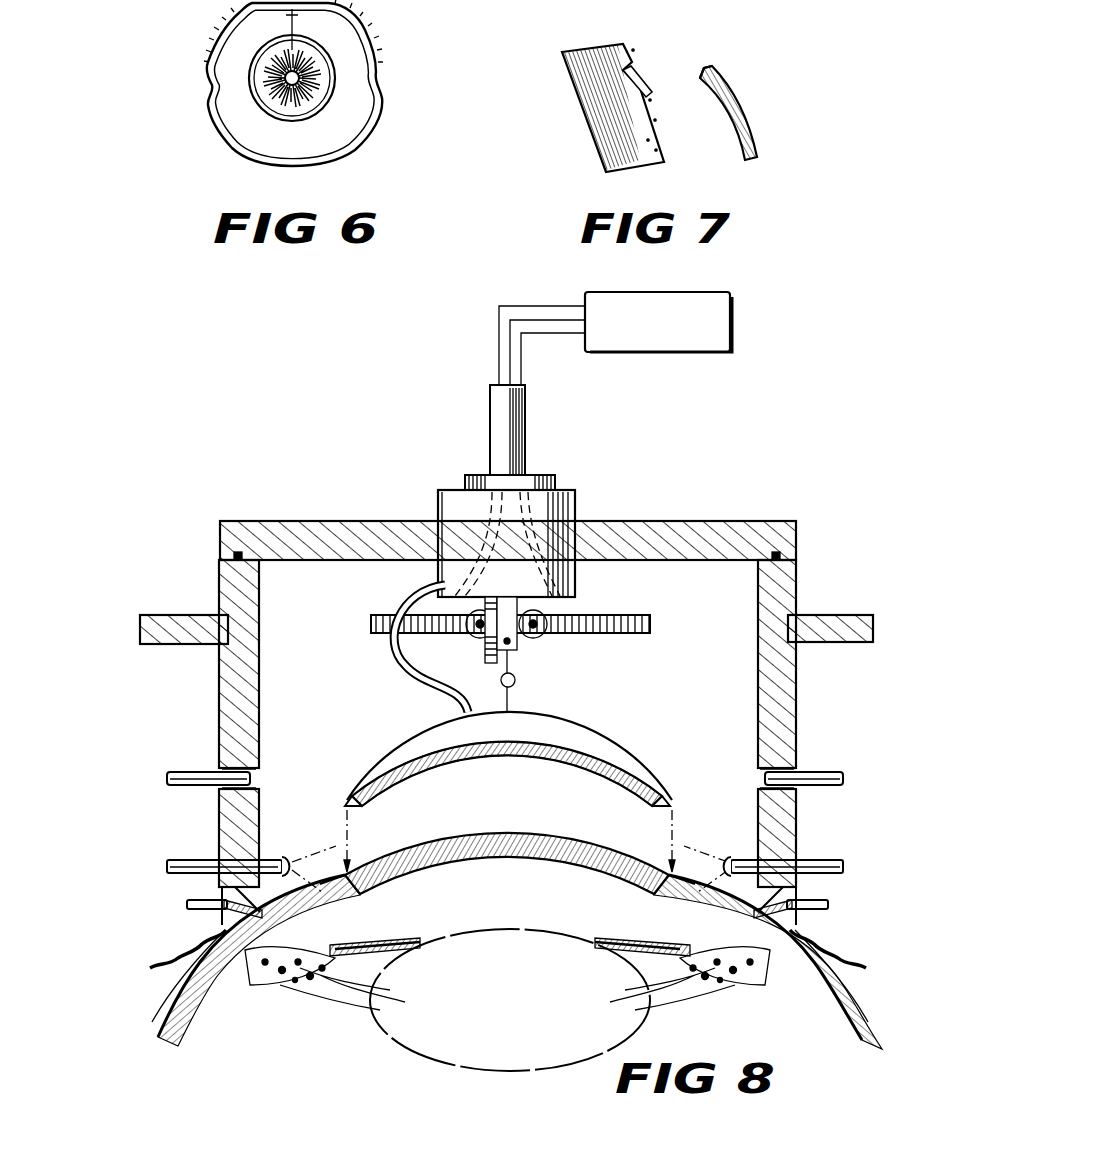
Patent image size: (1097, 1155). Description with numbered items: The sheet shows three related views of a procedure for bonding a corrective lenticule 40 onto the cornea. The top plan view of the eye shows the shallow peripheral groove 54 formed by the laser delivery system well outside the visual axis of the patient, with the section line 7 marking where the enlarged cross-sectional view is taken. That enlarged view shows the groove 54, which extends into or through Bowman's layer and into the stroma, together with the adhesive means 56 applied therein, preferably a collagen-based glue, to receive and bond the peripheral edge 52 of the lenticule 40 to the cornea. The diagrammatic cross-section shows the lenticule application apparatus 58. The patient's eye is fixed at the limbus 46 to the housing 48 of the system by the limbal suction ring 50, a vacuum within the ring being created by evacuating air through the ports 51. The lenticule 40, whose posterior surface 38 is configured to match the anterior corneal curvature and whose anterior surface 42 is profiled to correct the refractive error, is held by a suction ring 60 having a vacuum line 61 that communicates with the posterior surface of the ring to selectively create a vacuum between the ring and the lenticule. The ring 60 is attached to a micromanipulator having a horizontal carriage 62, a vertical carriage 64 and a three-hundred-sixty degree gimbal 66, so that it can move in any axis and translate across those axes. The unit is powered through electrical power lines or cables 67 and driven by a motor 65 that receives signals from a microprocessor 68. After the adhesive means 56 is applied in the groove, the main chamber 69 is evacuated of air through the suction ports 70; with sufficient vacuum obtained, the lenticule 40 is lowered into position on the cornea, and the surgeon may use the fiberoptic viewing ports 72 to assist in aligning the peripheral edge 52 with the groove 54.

In FIG. 6, the section line 7— 7 is at (308, 15).
In FIG. 8, the posterior surface 38 is at (448, 760).
In FIG. 7, the lenticule 40 is at (748, 89).
In FIG. 8, the lenticule 40 is at (531, 745).
In FIG. 8, the anterior surface 42 is at (538, 745).
In FIG. 8, the limbus 46 is at (228, 935).
In FIG. 8, the housing 48 is at (219, 700).
In FIG. 8, the limbal suction ring 50 is at (220, 912).
In FIG. 8, the ports 51 is at (190, 900).
In FIG. 7, the peripheral edge 52 is at (708, 70).
In FIG. 8, the peripheral edge 52 is at (668, 800).
In FIG. 6, the peripheral groove 54 is at (330, 112).
In FIG. 7, the peripheral groove 54 is at (630, 94).
In FIG. 8, the peripheral groove 54 is at (352, 866).
In FIG. 7, the adhesive means 56 is at (646, 82).
In FIG. 8, the lenticule application apparatus 58 is at (736, 520).
In FIG. 8, the suction ring 60 is at (430, 722).
In FIG. 8, the vacuum line 61 is at (410, 652).
In FIG. 8, the horizontal carriage 62 is at (372, 617).
In FIG. 8, the vertical carriage 64 is at (485, 655).
In FIG. 8, the motor 65 is at (505, 491).
In FIG. 8, the 360° gimbal 66 is at (516, 680).
In FIG. 8, the electrical power lines or cables 67 is at (540, 530).
In FIG. 8, the microprocessor 68 is at (732, 322).
In FIG. 8, the main chamber 69 is at (720, 698).
In FIG. 8, the suction ports 70 is at (206, 776).
In FIG. 8, the fiberoptic viewing ports 72 is at (210, 860).